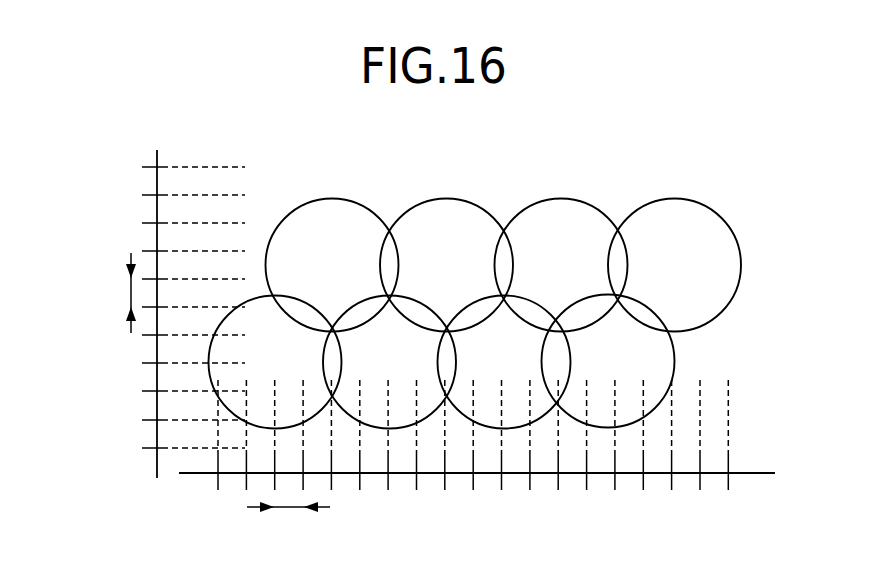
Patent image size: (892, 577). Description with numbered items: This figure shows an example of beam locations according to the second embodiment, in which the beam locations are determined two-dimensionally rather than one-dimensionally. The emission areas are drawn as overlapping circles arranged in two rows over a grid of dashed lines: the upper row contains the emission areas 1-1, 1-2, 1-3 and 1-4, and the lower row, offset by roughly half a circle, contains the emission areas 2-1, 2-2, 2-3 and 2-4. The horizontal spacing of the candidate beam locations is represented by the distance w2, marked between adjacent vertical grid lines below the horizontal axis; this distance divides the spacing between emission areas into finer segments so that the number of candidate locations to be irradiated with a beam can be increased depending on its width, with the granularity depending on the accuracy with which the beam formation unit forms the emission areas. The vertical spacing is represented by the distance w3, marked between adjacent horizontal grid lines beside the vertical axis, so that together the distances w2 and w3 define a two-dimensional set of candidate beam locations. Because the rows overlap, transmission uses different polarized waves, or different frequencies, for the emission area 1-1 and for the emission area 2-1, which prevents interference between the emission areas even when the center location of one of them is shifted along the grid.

The emission area 1-1 is at (332, 265).
The emission area 1-2 is at (446, 265).
The emission area 1-3 is at (561, 265).
The emission area 1-4 is at (674, 265).
The emission area 2-1 is at (275, 362).
The emission area 2-2 is at (389, 362).
The emission area 2-3 is at (504, 362).
The emission area 2-4 is at (608, 361).
The distance w2 is at (288, 523).
The distance w3 is at (111, 293).